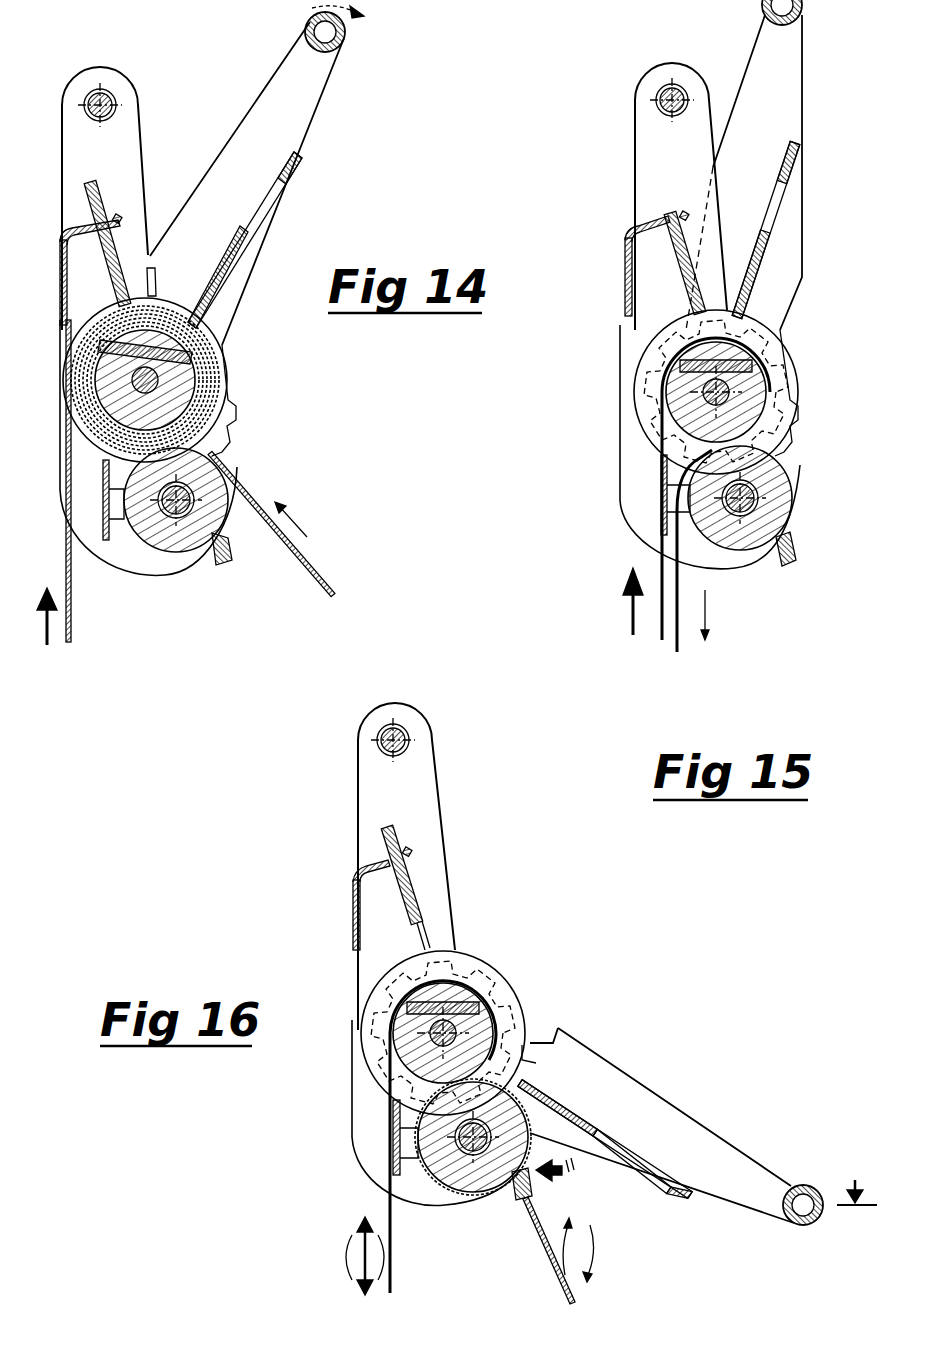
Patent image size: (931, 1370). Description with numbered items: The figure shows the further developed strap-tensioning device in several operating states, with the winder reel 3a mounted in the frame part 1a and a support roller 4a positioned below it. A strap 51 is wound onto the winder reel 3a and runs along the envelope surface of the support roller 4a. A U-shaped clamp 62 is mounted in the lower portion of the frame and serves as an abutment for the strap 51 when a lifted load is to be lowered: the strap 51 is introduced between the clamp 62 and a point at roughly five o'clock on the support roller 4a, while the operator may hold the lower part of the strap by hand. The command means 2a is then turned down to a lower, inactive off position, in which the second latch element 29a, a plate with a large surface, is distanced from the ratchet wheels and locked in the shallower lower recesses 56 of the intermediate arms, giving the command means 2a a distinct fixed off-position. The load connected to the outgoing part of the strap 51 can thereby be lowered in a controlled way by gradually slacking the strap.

In FIG. 14, the strap 51 is at (288, 541).
In FIG. 15, the winder reel 3a is at (757, 392).
In FIG. 16, the winder reel 3a is at (456, 985).
In FIG. 16, the lever arm 1a is at (358, 808).
In FIG. 16, the support roller 4a is at (453, 1180).
In FIG. 16, the U-shaped clamp 62 is at (520, 1202).
In FIG. 16, the second recess 56 is at (530, 1090).
In FIG. 16, the second latch element 29a is at (605, 1132).
In FIG. 16, the command means 2a is at (772, 1157).